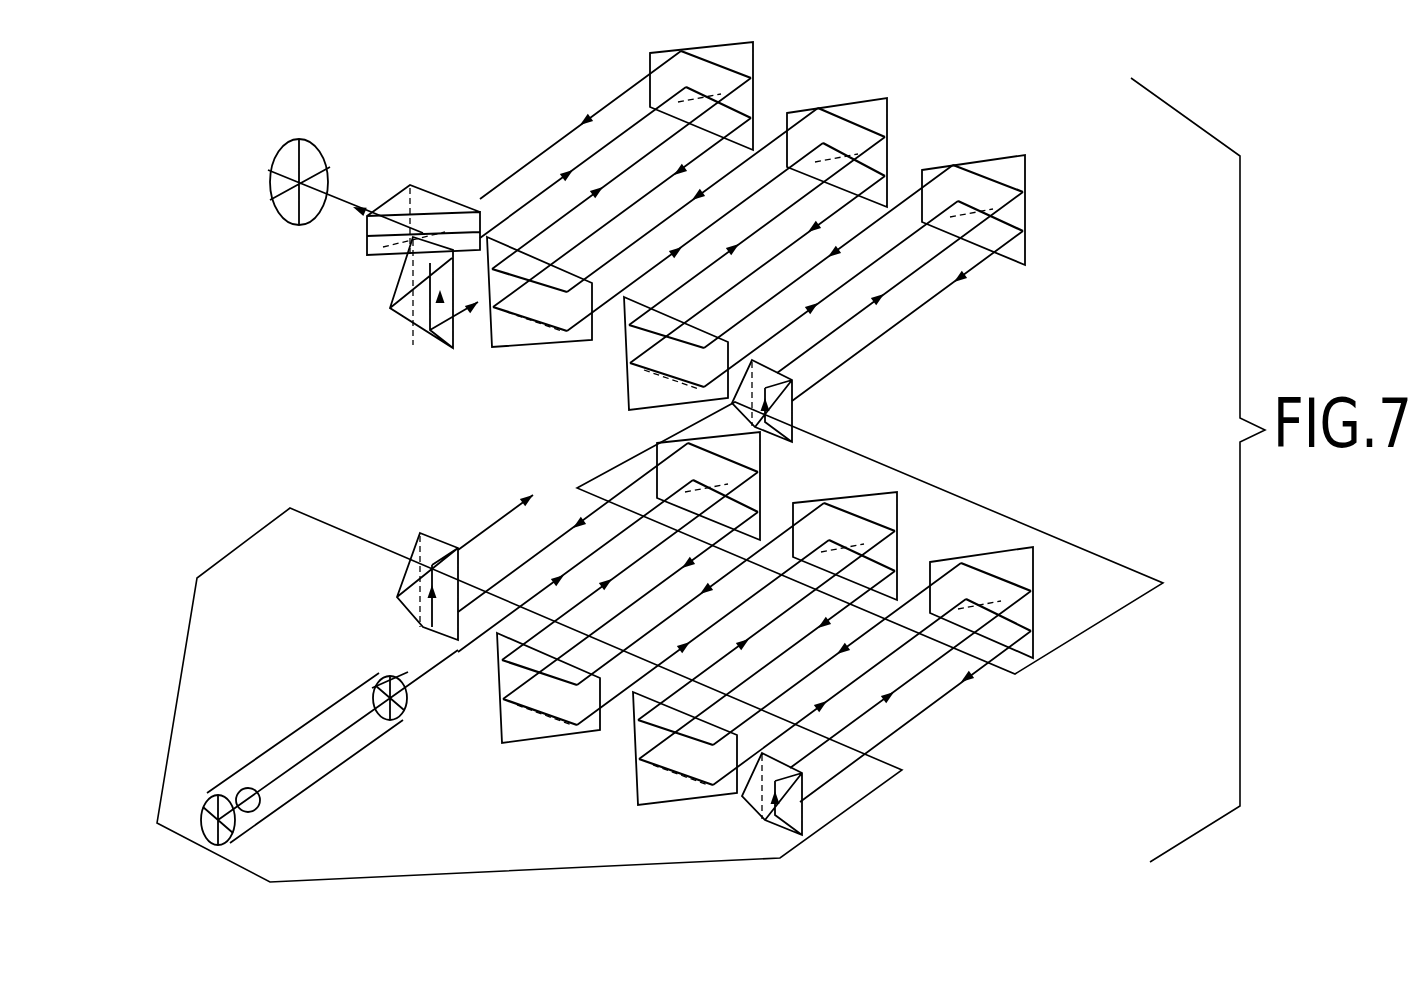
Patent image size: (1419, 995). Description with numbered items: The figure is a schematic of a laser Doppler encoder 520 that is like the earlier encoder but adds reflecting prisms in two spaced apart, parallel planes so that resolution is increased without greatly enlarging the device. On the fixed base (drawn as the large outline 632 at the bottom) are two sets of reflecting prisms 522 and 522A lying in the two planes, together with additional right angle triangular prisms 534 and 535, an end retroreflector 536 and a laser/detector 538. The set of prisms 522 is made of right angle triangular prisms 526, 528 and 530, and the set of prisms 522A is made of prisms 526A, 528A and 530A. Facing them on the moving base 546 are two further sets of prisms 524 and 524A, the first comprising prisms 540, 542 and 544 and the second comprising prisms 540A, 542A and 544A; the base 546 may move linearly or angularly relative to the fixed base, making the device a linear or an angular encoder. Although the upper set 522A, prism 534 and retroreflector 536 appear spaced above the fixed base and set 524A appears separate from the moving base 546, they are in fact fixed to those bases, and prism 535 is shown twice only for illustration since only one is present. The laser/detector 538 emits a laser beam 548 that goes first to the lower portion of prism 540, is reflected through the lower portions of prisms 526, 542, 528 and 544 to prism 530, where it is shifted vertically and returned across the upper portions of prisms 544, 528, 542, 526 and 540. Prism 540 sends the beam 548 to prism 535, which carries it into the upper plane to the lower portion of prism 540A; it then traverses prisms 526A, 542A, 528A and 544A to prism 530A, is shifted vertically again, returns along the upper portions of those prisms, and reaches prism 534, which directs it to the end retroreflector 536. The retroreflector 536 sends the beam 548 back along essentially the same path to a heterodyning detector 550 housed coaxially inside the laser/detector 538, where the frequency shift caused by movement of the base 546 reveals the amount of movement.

The laser Doppler encoder 520 is at (290, 435).
The set of reflecting prisms 522 is at (607, 740).
The set of reflecting prisms 522A is at (661, 347).
The set of reflecting prisms 524 is at (887, 535).
The set of reflecting prisms 524A is at (896, 137).
The right angle triangular prism 526 is at (490, 728).
The right angle triangular prism 526A is at (507, 343).
The right angle triangular prism 528 is at (643, 790).
The right angle triangular prism 528A is at (627, 407).
The right angle triangular prism 530 is at (760, 812).
The right angle triangular prism 530A is at (797, 410).
The right angle triangular prism 534 is at (430, 192).
The right angle triangular prism 535 is at (415, 548).
The end retroreflector 536 is at (320, 145).
The laser/detector 538 is at (305, 780).
The right angle triangular prism 540 is at (757, 460).
The prism 540A is at (754, 43).
The right angle triangular prism 542 is at (889, 502).
The prism 542A is at (887, 113).
The right angle triangular prism 544 is at (1007, 553).
The prism 544A is at (1017, 170).
The moving base 546 is at (1060, 541).
The laser beam 548 is at (433, 665).
The heterodyning detector 550 is at (238, 790).
The base plane 632 is at (607, 850).